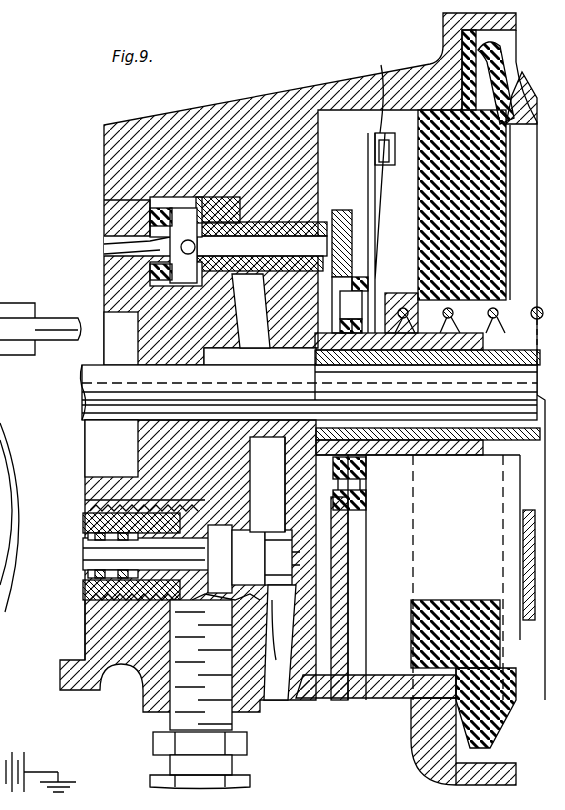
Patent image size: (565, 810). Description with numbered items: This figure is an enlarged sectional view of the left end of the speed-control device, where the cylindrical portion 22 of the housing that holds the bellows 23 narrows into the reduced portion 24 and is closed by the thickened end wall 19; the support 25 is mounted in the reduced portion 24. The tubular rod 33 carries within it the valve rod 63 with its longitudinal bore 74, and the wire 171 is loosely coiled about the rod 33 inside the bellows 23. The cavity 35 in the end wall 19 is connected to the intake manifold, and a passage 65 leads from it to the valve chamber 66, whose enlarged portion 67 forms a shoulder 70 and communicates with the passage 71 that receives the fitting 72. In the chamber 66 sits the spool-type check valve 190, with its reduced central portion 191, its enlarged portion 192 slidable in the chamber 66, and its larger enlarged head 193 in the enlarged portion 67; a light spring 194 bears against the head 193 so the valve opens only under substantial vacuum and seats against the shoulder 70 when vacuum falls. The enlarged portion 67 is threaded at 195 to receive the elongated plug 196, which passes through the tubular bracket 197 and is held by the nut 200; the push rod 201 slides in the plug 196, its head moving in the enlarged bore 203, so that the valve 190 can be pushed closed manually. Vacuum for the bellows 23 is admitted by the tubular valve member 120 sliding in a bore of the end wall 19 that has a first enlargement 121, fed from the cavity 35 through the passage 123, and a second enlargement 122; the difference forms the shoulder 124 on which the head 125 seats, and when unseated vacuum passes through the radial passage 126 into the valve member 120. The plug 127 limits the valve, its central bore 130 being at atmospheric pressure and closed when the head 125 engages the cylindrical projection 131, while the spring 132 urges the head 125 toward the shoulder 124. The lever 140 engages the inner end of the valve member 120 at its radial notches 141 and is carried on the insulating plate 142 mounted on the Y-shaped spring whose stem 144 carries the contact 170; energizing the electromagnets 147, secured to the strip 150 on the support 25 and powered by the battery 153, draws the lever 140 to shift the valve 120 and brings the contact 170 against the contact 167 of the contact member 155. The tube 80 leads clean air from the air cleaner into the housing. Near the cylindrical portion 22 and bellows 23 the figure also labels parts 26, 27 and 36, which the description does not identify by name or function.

The end wall 19 is at (118, 141).
The cylindrical portion 22 is at (440, 783).
The bellows 23 is at (430, 752).
The reduced portion 24 is at (376, 699).
The support 25 is at (420, 648).
The seal lip 26 is at (430, 722).
The seal 27 is at (420, 708).
The rod 33 is at (493, 455).
The cavity 35 is at (270, 484).
The spring 36 is at (447, 455).
The valve rod 63 is at (405, 497).
The passage 65 is at (245, 455).
The valve chamber 66 is at (335, 540).
The enlarged portion 67 is at (245, 488).
The shoulder 70 is at (240, 488).
The passage 71 is at (172, 615).
The fitting 72 is at (153, 743).
The longitudinal bore 74 is at (525, 336).
The tube 80 is at (46, 318).
The tubular valve member 120 is at (262, 207).
The first enlargement 121 is at (244, 218).
The second enlargement 122 is at (188, 198).
The passage 123 is at (260, 320).
The shoulder 124 is at (210, 198).
The head 125 is at (110, 248).
The radial passage 126 is at (121, 338).
The plug 127 is at (104, 200).
The central bore 130 is at (104, 238).
The cylindrical projection 131 is at (150, 250).
The spring 132 is at (130, 280).
The lever 140 is at (362, 215).
The radial notches 141 is at (360, 245).
The insulating plate 142 is at (365, 290).
The stem 144 is at (375, 238).
The electromagnets 147 is at (466, 577).
The strip 150 is at (532, 615).
The battery 153 is at (25, 750).
The contact member 155 is at (372, 176).
The contact 167 is at (358, 88).
The contact 170 is at (395, 110).
The wire 171 is at (533, 300).
The check valve 190 is at (300, 590).
The reduced central portion 191 is at (236, 559).
The enlarged portion 192 is at (280, 560).
The enlarged head 193 is at (220, 600).
The light spring 194 is at (195, 500).
The threads 195 is at (90, 511).
The plug 196 is at (105, 505).
The tubular bracket 197 is at (85, 610).
The nut 200 is at (88, 574).
The push rod 201 is at (96, 549).
The enlarged bore 203 is at (88, 534).